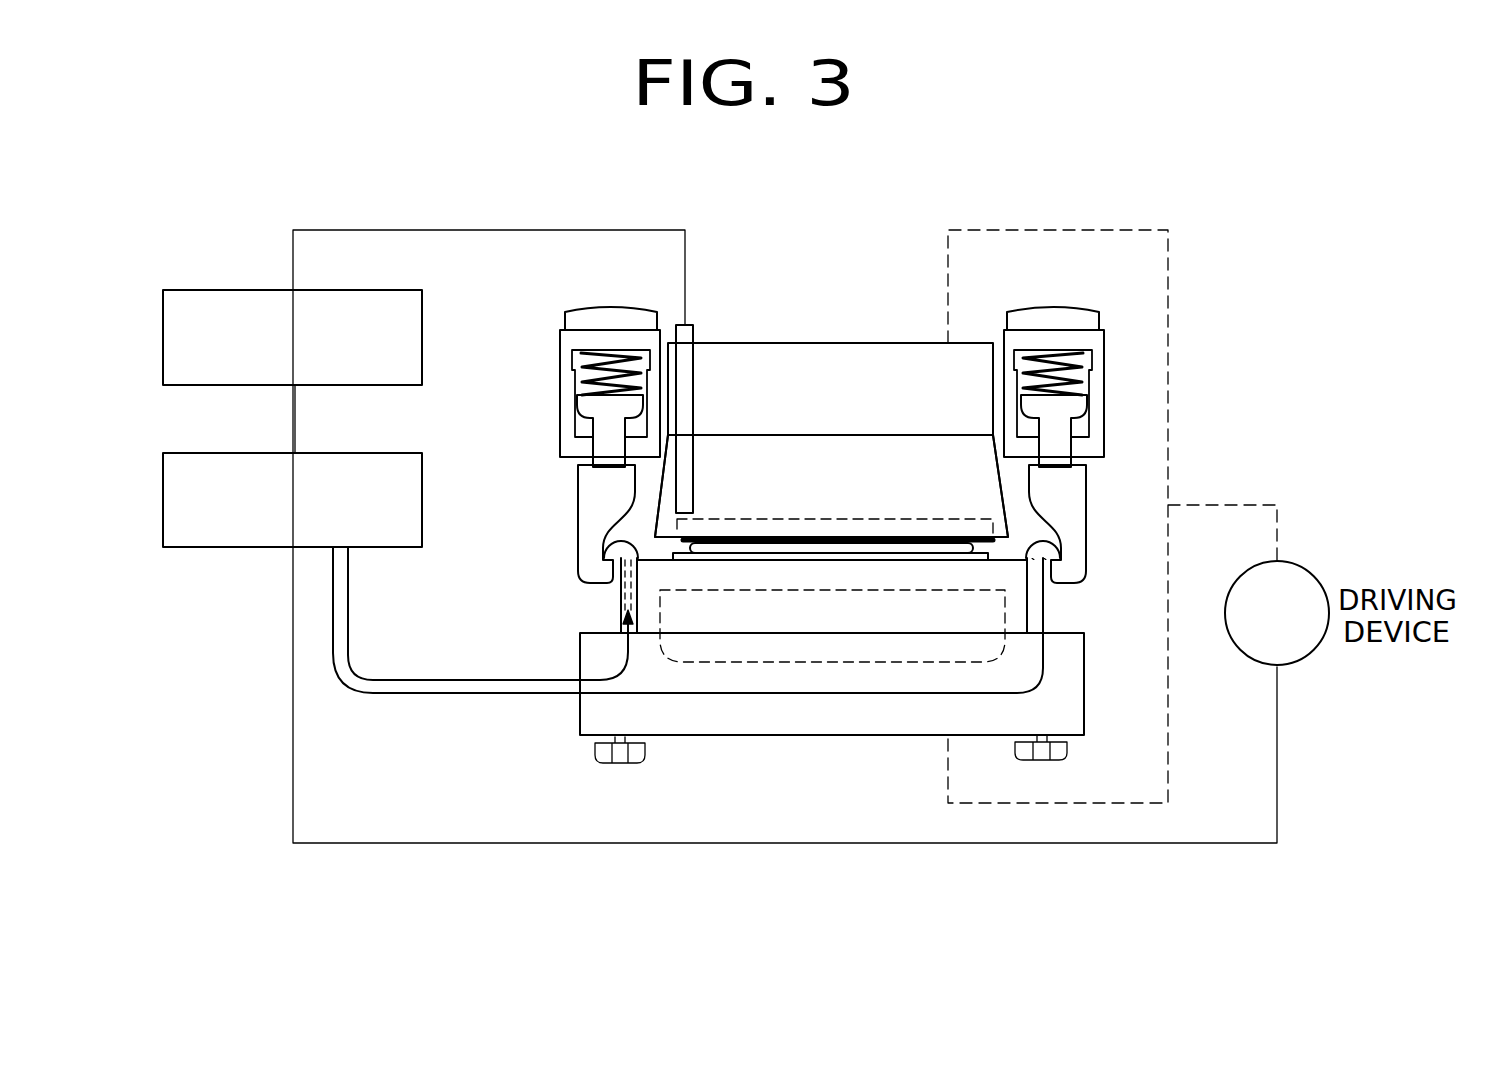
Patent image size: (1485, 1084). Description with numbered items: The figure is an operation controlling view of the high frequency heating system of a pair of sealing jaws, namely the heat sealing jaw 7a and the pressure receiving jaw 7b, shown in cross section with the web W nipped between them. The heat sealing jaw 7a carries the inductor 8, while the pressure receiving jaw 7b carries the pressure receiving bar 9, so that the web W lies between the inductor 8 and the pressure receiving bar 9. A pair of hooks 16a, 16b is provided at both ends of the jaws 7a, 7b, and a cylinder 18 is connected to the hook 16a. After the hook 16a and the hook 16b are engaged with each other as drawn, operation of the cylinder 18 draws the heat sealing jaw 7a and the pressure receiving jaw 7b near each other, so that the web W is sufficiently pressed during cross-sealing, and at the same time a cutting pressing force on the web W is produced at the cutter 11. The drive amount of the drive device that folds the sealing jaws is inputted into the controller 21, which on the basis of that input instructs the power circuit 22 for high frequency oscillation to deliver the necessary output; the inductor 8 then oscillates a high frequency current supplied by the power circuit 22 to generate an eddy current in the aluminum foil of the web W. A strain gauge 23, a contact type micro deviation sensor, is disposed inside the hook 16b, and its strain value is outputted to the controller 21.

The heat sealing jaw 7a is at (822, 367).
The pressure receiving jaw 7b is at (788, 722).
The inductor 8 is at (890, 447).
The pressure receiving bar 9 is at (695, 627).
The cutter 11 is at (872, 650).
The hook 16a is at (578, 512).
The hook 16b is at (620, 592).
The cylinder 18 is at (575, 352).
The controller 21 is at (363, 453).
The power circuit 22 is at (363, 290).
The strain gauge 23 is at (615, 583).
The web W is at (747, 537).